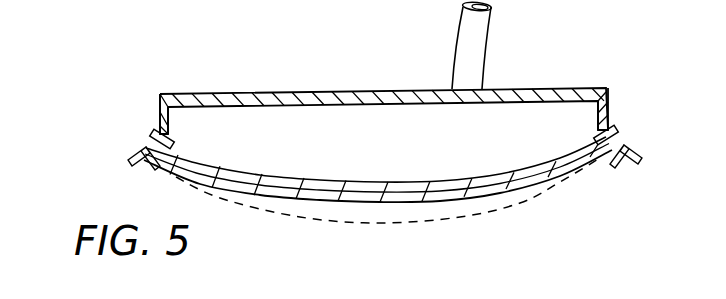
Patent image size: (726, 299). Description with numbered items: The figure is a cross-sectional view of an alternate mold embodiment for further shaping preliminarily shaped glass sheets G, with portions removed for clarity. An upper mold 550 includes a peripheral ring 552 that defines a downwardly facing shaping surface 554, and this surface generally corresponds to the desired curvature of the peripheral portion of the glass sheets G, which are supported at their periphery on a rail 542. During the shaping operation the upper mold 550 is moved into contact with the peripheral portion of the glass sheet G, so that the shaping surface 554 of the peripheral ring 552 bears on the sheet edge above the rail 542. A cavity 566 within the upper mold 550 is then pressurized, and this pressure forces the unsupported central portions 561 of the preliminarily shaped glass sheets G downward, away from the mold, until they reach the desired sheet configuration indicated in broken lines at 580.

The upper mold 550 is at (533, 89).
The peripheral ring 552 is at (155, 135).
The downwardly facing shaping surface 554 is at (150, 140).
The rail 542 is at (131, 162).
The unsupported central portions 561 is at (430, 200).
The cavity 566 is at (346, 113).
The desired sheet configuration 580 is at (300, 217).
The glass sheets G is at (505, 192).